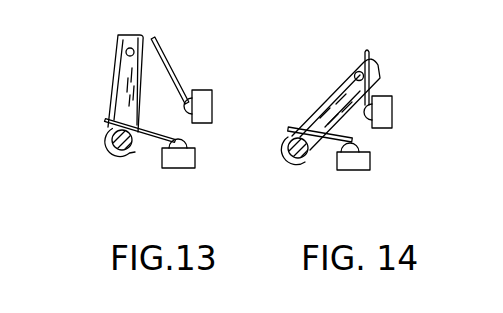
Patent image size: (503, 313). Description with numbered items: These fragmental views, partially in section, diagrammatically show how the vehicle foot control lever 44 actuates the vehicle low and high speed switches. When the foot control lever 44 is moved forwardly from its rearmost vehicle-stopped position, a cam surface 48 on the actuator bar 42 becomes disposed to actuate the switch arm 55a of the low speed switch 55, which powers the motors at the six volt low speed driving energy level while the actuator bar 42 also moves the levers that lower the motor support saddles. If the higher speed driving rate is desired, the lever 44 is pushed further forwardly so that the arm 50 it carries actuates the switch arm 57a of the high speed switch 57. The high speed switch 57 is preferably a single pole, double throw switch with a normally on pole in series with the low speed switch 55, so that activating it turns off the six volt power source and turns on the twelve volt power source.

In FIG. 13, the actuator bar 42 is at (135, 153).
In FIG. 14, the actuator bar 42 is at (306, 163).
In FIG. 13, the foot control lever 44 is at (120, 88).
In FIG. 14, the foot control lever 44 is at (323, 108).
In FIG. 13, the cam surface 48 is at (108, 142).
In FIG. 14, the cam surface 48 is at (283, 157).
In FIG. 13, the arm 50 is at (126, 52).
In FIG. 14, the arm 50 is at (351, 72).
In FIG. 13, the low speed switch 55 is at (173, 158).
In FIG. 14, the low speed switch 55 is at (362, 166).
In FIG. 13, the switch arm 55a is at (155, 131).
In FIG. 14, the switch arm 55a is at (320, 134).
In FIG. 13, the high speed switch 57 is at (207, 100).
In FIG. 14, the high speed switch 57 is at (386, 112).
In FIG. 14, the switch arm 57a is at (370, 55).